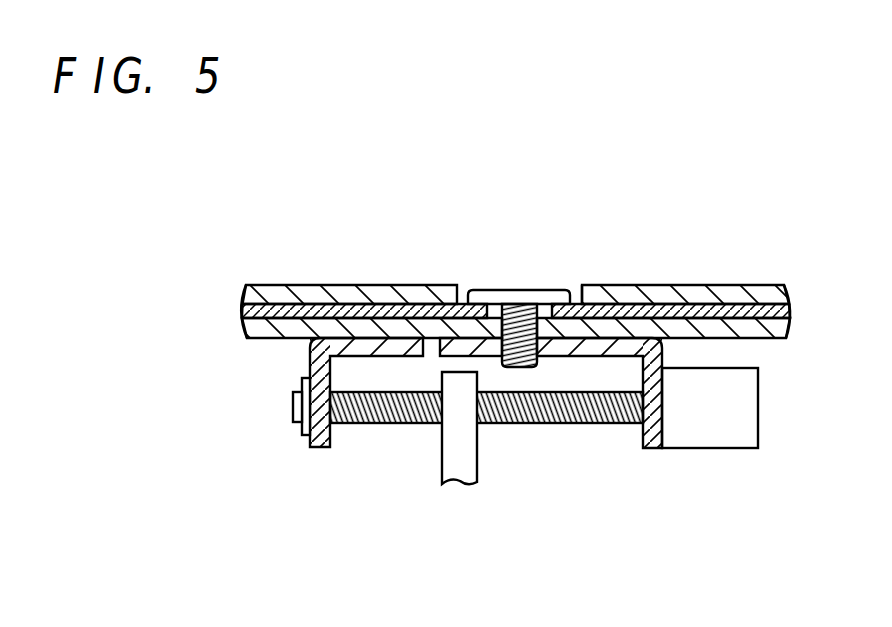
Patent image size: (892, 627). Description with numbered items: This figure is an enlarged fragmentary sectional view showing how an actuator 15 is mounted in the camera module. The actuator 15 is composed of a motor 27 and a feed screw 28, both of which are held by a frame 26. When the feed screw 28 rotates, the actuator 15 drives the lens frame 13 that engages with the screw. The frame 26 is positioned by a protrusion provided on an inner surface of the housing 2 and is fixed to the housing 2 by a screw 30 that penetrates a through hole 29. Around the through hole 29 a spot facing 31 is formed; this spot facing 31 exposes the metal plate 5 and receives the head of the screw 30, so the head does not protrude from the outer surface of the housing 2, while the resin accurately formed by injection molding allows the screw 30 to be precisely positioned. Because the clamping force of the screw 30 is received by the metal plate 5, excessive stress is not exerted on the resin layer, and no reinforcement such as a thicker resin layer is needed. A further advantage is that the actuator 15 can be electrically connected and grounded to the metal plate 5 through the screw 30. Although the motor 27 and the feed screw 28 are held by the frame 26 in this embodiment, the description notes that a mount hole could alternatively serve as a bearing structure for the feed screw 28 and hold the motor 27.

The housing 2 is at (310, 285).
The metal plate 5 is at (663, 263).
The lens frame 13 is at (468, 486).
The actuator 15 is at (649, 460).
The frame 26 is at (321, 448).
The motor 27 is at (704, 448).
The feed screw 28 is at (550, 426).
The through hole 29 is at (500, 289).
The screw 30 is at (520, 289).
The spot facing 31 is at (577, 289).